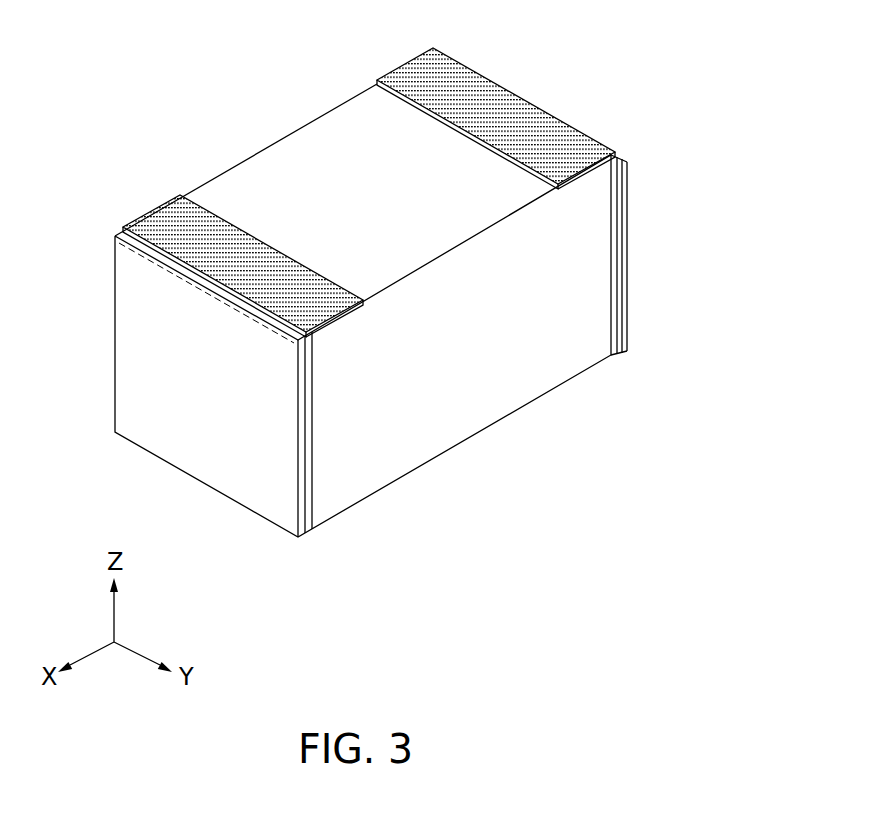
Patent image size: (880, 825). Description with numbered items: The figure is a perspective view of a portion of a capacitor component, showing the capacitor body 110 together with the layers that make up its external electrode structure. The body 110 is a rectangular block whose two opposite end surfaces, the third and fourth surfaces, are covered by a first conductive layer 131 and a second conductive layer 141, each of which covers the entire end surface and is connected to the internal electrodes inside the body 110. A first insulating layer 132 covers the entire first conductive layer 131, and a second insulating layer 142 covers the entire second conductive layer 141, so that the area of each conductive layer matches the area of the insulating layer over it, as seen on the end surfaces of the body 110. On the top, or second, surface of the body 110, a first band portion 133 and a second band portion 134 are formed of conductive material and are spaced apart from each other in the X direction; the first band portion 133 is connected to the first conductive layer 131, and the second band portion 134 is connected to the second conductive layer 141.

The body 110 is at (296, 131).
The first conductive layer 131 is at (313, 427).
The first insulating layer 132 is at (307, 509).
The first band portion 133 is at (172, 220).
The second band portion 134 is at (518, 113).
The second conductive layer 141 is at (617, 233).
The second insulating layer 142 is at (622, 298).